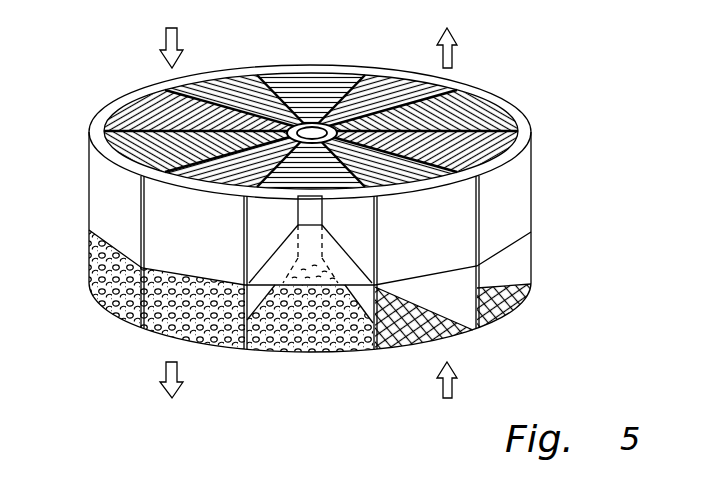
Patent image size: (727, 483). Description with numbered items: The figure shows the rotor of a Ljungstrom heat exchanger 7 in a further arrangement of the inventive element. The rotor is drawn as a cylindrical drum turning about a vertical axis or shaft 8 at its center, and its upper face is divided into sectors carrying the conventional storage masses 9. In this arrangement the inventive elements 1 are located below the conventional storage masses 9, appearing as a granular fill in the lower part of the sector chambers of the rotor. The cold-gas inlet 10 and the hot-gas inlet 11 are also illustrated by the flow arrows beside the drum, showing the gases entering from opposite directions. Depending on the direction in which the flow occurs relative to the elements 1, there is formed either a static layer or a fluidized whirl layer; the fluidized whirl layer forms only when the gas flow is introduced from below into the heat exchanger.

The inventive elements 1 is at (312, 316).
The Ljungstrom heat exchanger 7 is at (82, 211).
The shaft 8 is at (313, 127).
The conventional storage masses 9 is at (487, 113).
The cold-gas inlet 10 is at (456, 387).
The hot-gas inlet 11 is at (176, 37).